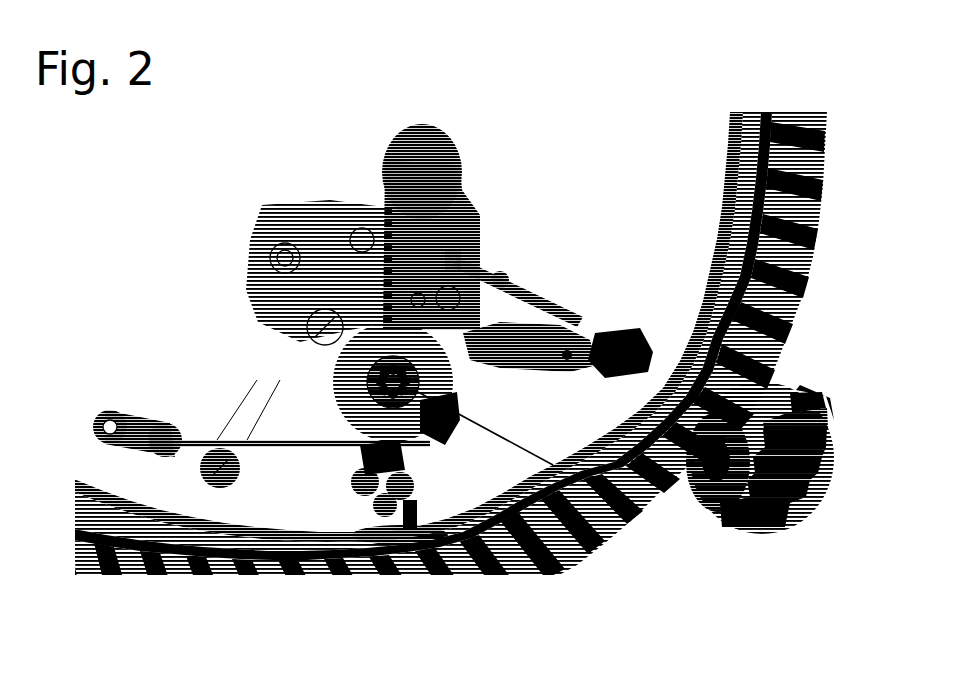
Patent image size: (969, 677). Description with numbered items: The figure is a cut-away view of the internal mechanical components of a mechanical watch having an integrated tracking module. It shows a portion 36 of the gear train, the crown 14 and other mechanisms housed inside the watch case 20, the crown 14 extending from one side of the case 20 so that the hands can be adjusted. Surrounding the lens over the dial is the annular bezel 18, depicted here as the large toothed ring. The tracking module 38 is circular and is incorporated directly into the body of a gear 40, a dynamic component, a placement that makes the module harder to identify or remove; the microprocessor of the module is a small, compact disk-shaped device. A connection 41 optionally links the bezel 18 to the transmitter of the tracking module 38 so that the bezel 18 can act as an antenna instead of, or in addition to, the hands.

The crown 14 is at (825, 402).
The annular bezel 18 is at (805, 228).
The case 20 is at (680, 554).
The portion of the gear train 36 is at (222, 207).
The tracking module 38 is at (373, 369).
The gear 40 is at (358, 393).
The connection 41 is at (510, 432).